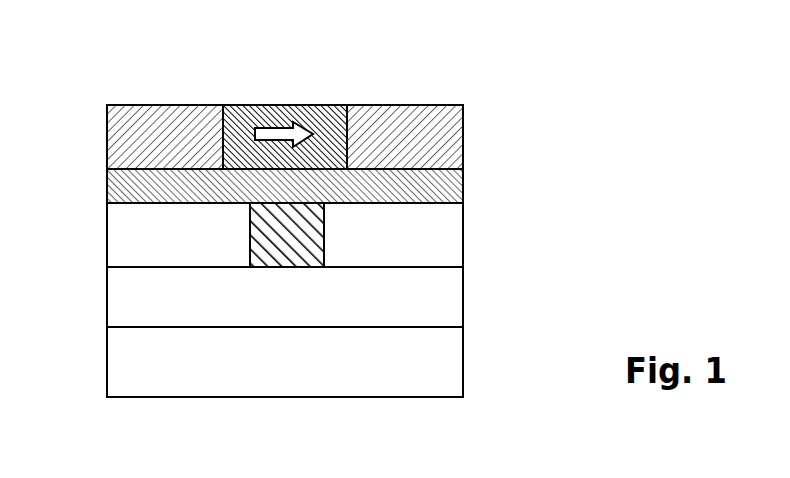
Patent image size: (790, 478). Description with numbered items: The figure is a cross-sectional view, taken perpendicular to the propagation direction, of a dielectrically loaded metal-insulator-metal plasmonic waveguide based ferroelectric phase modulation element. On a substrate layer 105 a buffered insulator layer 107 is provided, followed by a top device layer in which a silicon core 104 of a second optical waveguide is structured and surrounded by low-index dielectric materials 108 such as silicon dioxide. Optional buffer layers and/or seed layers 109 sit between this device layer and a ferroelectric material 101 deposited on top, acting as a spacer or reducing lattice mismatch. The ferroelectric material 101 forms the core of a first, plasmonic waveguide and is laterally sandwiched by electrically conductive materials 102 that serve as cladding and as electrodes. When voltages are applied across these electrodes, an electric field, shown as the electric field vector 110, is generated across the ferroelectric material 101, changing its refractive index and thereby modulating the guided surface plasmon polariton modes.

The ferroelectric material 101 is at (242, 106).
The electrically conductive materials 102 is at (357, 163).
The core 104 is at (300, 226).
The substrate layer 105 is at (128, 364).
The buffered insulator layer 107 is at (128, 300).
The dielectric materials 108 is at (337, 256).
The buffer layers and/or seed layers 109 is at (130, 188).
The electric field vector 110 is at (305, 107).